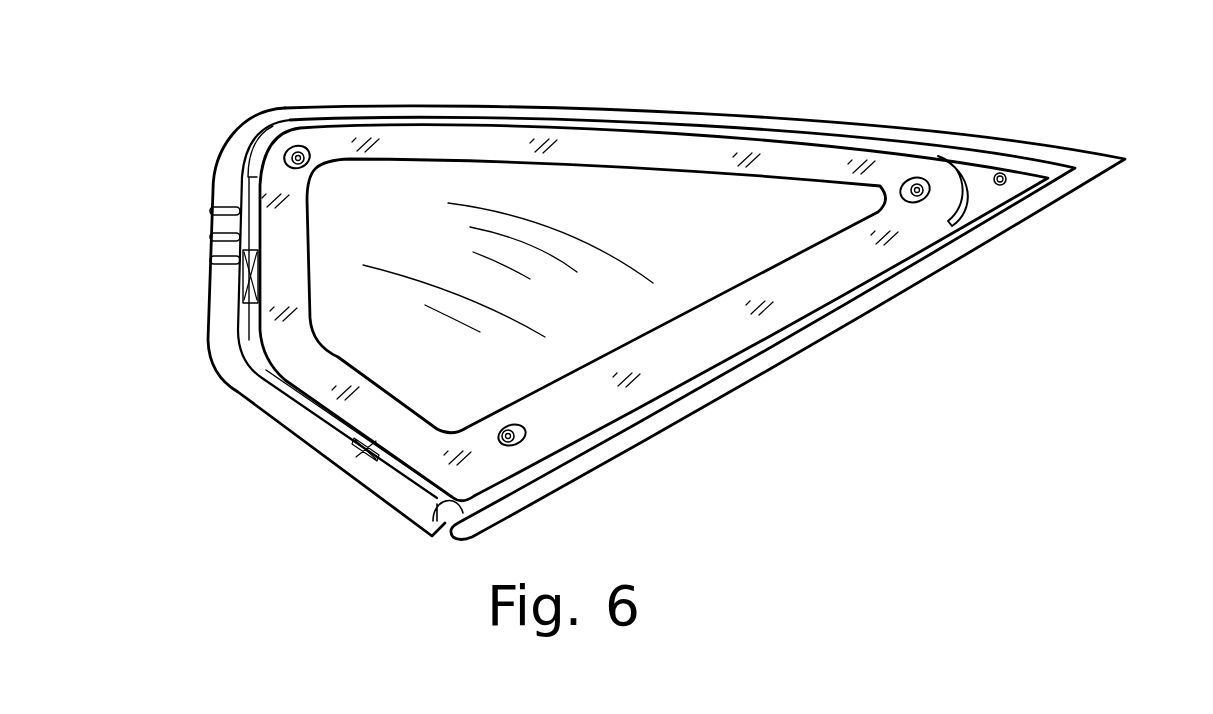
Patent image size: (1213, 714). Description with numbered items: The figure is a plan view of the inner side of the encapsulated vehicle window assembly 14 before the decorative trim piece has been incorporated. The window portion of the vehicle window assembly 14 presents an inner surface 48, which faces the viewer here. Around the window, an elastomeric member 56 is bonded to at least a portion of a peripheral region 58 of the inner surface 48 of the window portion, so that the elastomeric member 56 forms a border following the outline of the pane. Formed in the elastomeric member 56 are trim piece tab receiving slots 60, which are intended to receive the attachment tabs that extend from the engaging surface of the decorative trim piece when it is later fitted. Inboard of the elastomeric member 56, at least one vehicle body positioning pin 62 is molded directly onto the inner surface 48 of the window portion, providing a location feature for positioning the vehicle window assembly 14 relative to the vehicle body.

The vehicle window assembly 14 is at (1076, 100).
The inner surface 48 is at (612, 147).
The elastomeric member 56 is at (1090, 163).
The peripheral region 58 is at (687, 357).
The trim piece tab receiving slots 60 is at (243, 297).
The vehicle body positioning pin 62 is at (295, 150).